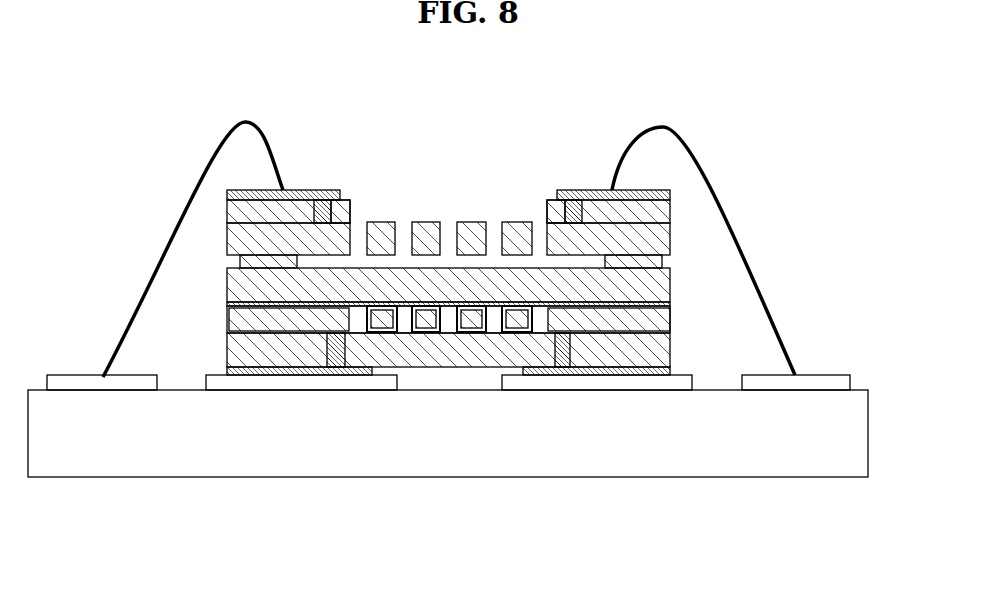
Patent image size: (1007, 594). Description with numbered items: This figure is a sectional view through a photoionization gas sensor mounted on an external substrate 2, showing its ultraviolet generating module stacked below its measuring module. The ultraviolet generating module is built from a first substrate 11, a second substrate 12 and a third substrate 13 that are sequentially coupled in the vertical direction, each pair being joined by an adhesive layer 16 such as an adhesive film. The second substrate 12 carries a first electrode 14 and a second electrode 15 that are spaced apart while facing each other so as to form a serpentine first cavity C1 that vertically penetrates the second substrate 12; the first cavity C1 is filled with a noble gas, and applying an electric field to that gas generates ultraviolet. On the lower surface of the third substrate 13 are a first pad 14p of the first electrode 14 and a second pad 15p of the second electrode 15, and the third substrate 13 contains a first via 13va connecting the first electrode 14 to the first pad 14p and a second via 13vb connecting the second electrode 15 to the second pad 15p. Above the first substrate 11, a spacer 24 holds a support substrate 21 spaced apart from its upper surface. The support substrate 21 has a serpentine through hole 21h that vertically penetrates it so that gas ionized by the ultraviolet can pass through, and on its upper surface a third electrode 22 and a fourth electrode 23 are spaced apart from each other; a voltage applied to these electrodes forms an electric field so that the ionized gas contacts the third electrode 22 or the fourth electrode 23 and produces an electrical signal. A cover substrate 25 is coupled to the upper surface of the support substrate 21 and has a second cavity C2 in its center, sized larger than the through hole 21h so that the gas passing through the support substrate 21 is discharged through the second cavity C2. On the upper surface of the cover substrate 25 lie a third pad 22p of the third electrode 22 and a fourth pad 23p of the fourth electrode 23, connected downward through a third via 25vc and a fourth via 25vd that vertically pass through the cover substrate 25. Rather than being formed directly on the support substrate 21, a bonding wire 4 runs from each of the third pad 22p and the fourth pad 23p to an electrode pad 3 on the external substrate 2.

The external substrate 2 is at (545, 440).
The electrode pad 3 is at (82, 387).
The bonding wire 4 is at (222, 130).
The first substrate 11 is at (237, 281).
The second substrate 12 is at (227, 290).
The third substrate 13 is at (235, 343).
The first via 13va is at (327, 358).
The second via 13vb is at (565, 347).
The first electrode 14 is at (342, 305).
The first pad 14p is at (227, 370).
The second electrode 15 is at (575, 294).
The second pad 15p is at (640, 373).
The adhesive layer 16 is at (233, 304).
The support substrate 21 is at (237, 207).
The through hole 21h is at (492, 238).
The third electrode 22 is at (427, 222).
The third pad 22p is at (298, 190).
The fourth electrode 23 is at (384, 222).
The fourth pad 23p is at (652, 190).
The spacer 24 is at (237, 240).
The cover substrate 25 is at (225, 199).
The third via 25vc is at (330, 200).
The fourth via 25vd is at (563, 205).
The first cavity C1 is at (448, 310).
The second cavity C2 is at (513, 205).